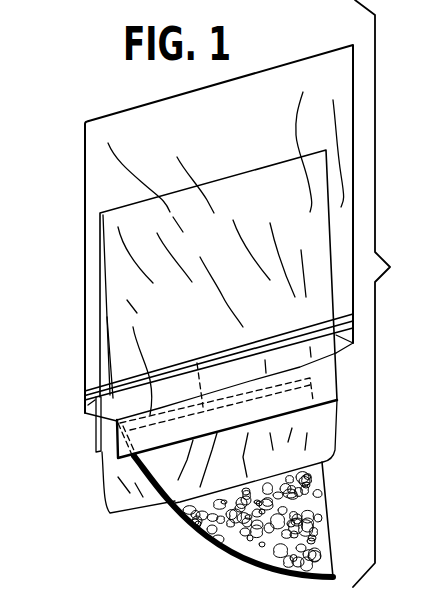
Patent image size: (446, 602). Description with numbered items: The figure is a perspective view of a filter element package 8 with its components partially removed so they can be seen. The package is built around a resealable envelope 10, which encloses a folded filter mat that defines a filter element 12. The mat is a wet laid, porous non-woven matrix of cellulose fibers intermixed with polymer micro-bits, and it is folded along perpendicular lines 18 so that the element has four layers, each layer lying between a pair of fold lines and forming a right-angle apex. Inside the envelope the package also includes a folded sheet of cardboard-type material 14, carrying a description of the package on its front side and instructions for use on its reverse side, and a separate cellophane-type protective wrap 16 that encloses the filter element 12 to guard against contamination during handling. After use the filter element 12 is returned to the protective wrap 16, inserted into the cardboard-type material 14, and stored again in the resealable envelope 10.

The filter element package 8 is at (384, 293).
The resealable envelope 10 is at (85, 233).
The filter element 12 is at (200, 538).
The folded sheet of cardboard-type material 14 is at (338, 380).
The cellophane-type protective wrap 16 is at (327, 432).
The perpendicular lines 18 is at (193, 367).